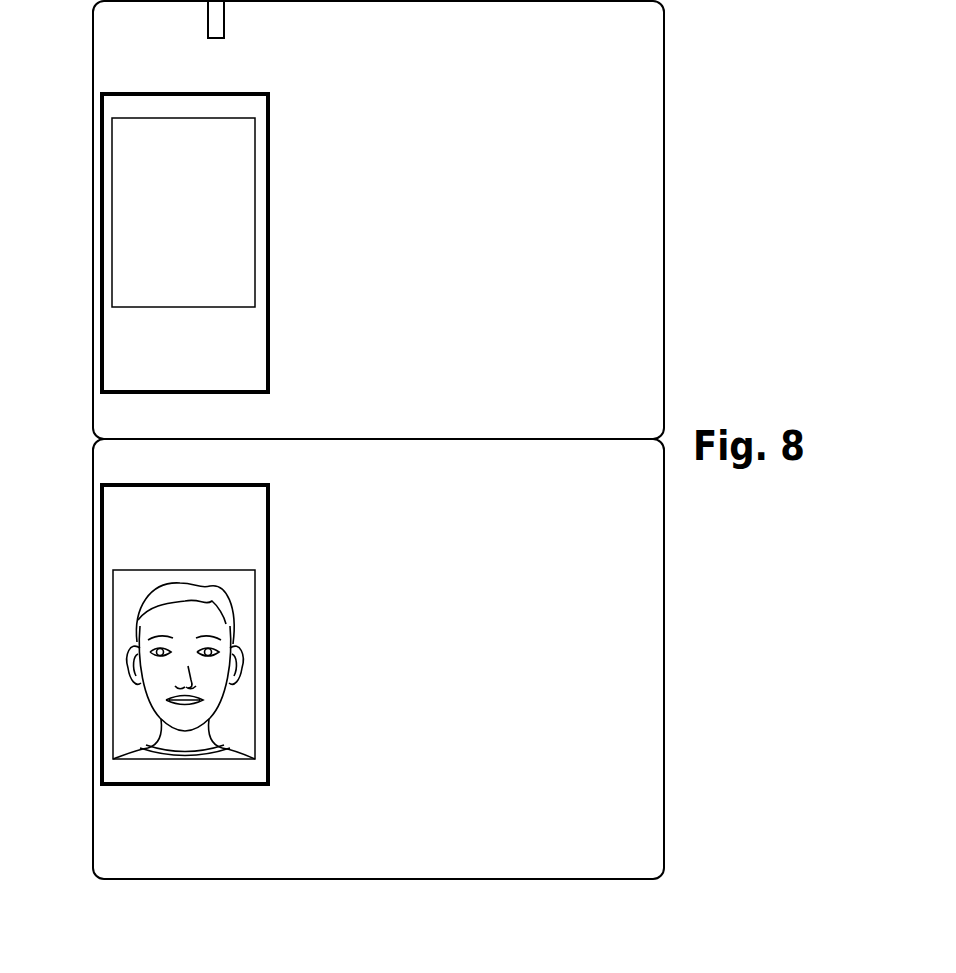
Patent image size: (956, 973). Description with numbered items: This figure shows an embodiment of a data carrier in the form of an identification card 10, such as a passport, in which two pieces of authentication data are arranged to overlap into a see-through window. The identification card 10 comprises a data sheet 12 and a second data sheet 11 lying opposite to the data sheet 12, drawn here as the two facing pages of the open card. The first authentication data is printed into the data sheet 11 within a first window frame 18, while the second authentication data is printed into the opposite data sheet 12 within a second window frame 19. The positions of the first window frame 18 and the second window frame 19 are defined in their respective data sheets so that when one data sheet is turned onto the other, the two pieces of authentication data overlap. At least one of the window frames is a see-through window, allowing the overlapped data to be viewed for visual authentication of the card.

The identification card 10 is at (795, 158).
The data sheet 12 is at (412, 220).
The second data sheet 11 is at (384, 659).
The second window frame 19 is at (268, 345).
The first window frame 18 is at (128, 540).